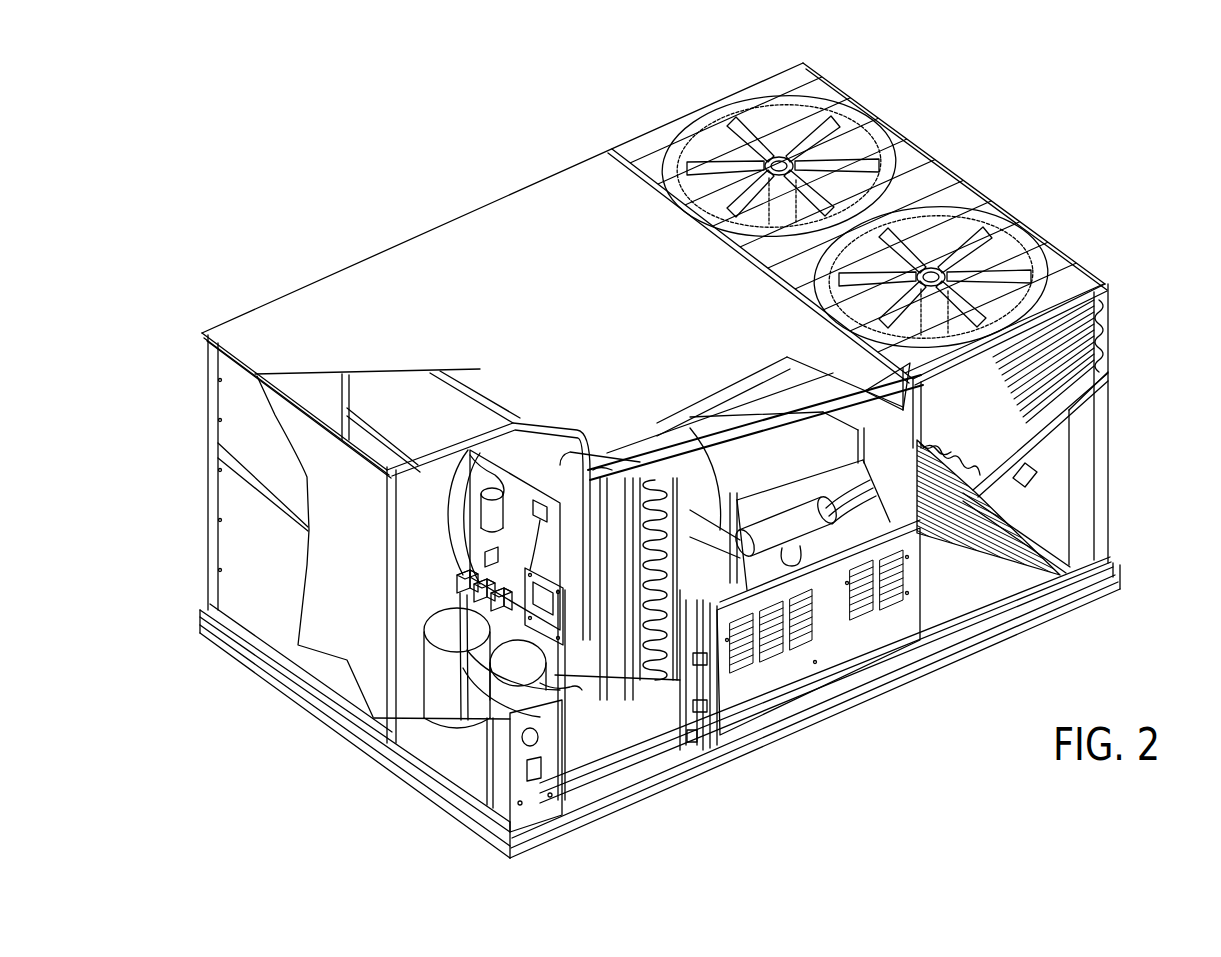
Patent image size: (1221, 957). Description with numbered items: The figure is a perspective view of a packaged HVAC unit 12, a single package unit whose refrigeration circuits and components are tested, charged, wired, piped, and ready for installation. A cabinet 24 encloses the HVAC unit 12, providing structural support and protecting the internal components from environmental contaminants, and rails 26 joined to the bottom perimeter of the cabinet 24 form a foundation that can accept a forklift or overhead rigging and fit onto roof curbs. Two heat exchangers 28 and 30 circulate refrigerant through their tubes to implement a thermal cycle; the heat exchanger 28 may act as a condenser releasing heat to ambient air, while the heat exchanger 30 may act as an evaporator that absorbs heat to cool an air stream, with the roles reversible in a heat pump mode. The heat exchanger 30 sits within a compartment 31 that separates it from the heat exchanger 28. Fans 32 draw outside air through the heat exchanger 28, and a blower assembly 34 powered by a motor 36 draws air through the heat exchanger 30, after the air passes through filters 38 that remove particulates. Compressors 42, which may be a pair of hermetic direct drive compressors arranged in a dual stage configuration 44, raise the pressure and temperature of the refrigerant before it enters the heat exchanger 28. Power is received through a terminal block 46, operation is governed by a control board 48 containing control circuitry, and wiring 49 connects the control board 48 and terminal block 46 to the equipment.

The HVAC unit 12 is at (378, 158).
The cabinet 24 is at (245, 583).
The rails 26 is at (270, 675).
The heat exchanger 28 is at (1112, 338).
The heat exchanger 30 is at (660, 650).
The compartment 31 is at (670, 520).
The fans 32 is at (948, 212).
The blower assembly 34 is at (850, 466).
The motor 36 is at (783, 520).
The filters 38 is at (620, 507).
The compressors 42 is at (430, 660).
The dual stage configuration 44 is at (416, 610).
The terminal block 46 is at (490, 553).
The control board 48 is at (507, 483).
The wiring 49 is at (640, 463).